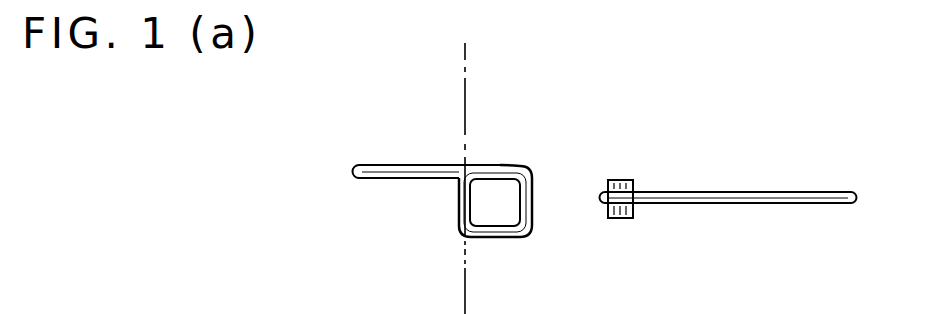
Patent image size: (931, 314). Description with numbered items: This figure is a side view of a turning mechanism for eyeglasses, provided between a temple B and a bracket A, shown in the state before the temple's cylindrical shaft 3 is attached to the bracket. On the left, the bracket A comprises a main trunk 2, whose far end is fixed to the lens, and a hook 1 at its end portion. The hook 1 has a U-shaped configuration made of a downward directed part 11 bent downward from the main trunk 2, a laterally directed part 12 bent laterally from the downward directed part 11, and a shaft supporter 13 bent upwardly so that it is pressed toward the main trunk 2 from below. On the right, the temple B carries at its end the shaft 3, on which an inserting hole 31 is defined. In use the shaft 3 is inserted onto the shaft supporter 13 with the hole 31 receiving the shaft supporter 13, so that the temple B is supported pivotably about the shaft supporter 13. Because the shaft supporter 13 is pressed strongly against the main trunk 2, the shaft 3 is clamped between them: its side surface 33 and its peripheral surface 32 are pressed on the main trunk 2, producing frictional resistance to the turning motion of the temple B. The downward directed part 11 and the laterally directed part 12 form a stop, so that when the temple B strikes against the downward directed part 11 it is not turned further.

The hook 1 is at (460, 197).
The main trunk 2 is at (377, 180).
The downward directed part 11 is at (533, 222).
The laterally directed part 12 is at (490, 238).
The shaft supporter 13 is at (458, 210).
The cylindrical shaft 3 is at (720, 192).
The inserting hole 31 is at (620, 178).
The peripheral surface 32 is at (634, 212).
The side surface 33 is at (614, 218).